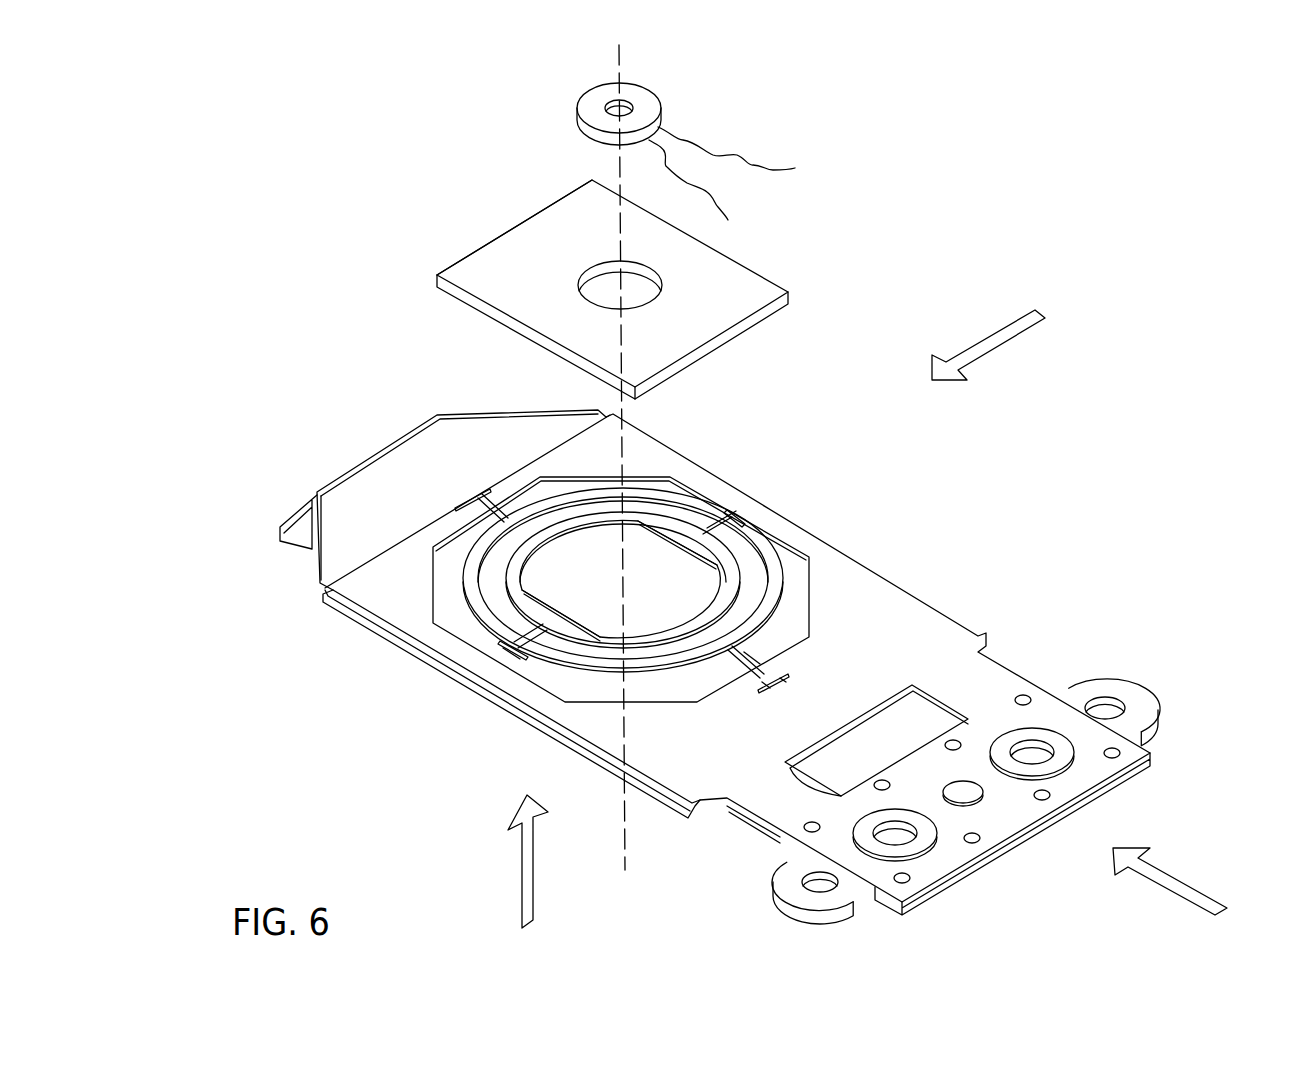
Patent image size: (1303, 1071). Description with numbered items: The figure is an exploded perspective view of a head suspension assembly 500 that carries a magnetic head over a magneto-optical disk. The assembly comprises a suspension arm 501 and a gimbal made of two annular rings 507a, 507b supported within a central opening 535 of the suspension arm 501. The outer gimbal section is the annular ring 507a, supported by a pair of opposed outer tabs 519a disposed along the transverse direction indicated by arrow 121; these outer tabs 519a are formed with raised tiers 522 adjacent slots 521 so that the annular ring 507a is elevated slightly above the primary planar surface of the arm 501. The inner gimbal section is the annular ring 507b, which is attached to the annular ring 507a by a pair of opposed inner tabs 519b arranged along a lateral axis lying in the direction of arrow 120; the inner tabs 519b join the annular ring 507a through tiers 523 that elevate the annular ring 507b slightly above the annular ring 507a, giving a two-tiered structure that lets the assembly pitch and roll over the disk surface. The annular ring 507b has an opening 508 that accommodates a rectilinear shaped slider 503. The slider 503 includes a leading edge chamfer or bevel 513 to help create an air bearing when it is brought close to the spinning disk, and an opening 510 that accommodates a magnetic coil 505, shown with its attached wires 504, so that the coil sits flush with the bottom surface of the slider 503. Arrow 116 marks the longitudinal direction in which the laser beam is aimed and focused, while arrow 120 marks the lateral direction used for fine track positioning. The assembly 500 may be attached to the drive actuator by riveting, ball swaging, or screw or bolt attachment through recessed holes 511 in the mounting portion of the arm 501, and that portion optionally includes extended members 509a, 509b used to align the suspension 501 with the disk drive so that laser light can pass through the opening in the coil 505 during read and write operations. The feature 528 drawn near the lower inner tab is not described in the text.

The head suspension assembly 500 is at (1044, 441).
The magnetic coil 505 is at (657, 102).
The attached wires 504 is at (757, 157).
The slider 503 is at (623, 289).
The opening 510 is at (600, 296).
The leading edge chamfer or bevel 513 is at (468, 254).
The suspension arm 501 is at (952, 638).
The recessed holes 511 is at (1033, 762).
The extended member 509a is at (1147, 683).
The extended member 509b is at (787, 907).
The central opening 535 is at (798, 607).
The annular ring 507a is at (673, 492).
The annular ring 507b is at (738, 587).
The opening 508 is at (680, 594).
The tiers 523 is at (736, 536).
The outer tabs 519a is at (458, 530).
The inner tabs 519b is at (748, 532).
The slots 521 is at (773, 688).
The raised tiers 522 is at (768, 656).
The spring attachment 528 is at (510, 645).
The arrow 120 is at (1005, 330).
The arrow 116 is at (530, 878).
The arrow 121 is at (1178, 880).